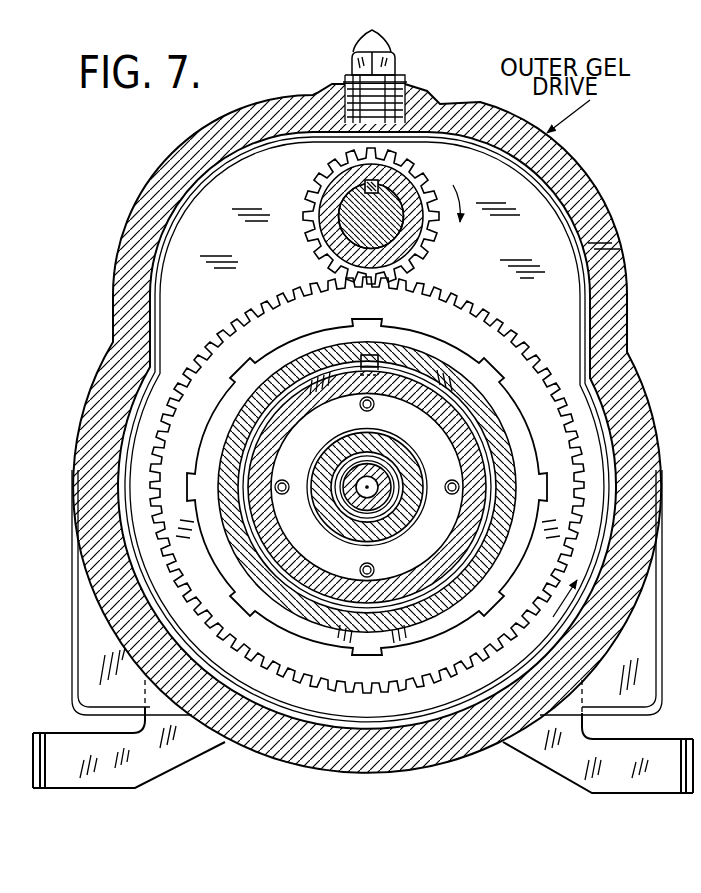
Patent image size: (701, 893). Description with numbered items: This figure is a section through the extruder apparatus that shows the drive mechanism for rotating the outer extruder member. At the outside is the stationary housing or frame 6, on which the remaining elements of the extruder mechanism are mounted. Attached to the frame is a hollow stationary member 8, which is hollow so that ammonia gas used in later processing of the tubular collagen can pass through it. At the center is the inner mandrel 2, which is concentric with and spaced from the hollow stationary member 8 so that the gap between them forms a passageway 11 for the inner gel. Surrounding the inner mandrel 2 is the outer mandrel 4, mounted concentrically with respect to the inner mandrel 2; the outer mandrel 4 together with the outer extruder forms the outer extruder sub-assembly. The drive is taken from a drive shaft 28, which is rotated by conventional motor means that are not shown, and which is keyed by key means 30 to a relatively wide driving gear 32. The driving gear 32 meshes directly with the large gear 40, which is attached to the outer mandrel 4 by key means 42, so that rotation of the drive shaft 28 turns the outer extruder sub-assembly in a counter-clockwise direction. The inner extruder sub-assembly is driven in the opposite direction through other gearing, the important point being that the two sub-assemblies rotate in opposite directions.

The inner mandrel 2 is at (392, 517).
The outer mandrel 4 is at (447, 405).
The stationary housing or frame 6 is at (133, 183).
The hollow stationary member 8 is at (388, 480).
The passageway 11 is at (342, 505).
The drive shaft 28 is at (352, 217).
The key means 30 is at (378, 183).
The driving gear 32 is at (318, 189).
The gear 40 is at (463, 320).
The key means 42 is at (377, 355).